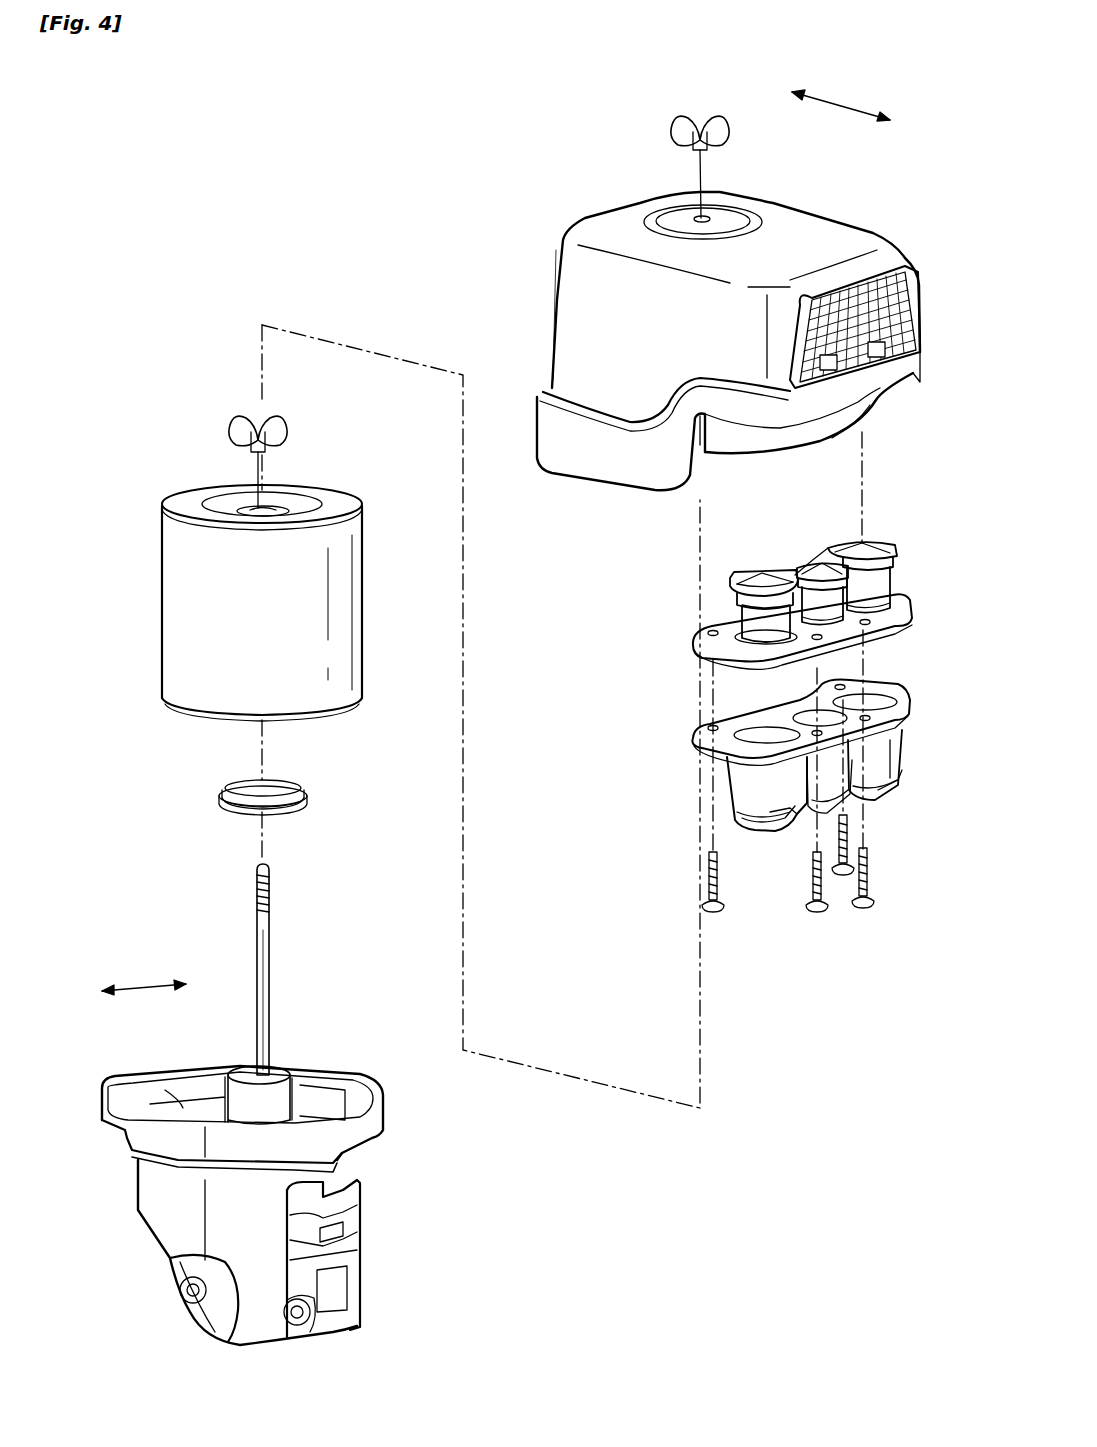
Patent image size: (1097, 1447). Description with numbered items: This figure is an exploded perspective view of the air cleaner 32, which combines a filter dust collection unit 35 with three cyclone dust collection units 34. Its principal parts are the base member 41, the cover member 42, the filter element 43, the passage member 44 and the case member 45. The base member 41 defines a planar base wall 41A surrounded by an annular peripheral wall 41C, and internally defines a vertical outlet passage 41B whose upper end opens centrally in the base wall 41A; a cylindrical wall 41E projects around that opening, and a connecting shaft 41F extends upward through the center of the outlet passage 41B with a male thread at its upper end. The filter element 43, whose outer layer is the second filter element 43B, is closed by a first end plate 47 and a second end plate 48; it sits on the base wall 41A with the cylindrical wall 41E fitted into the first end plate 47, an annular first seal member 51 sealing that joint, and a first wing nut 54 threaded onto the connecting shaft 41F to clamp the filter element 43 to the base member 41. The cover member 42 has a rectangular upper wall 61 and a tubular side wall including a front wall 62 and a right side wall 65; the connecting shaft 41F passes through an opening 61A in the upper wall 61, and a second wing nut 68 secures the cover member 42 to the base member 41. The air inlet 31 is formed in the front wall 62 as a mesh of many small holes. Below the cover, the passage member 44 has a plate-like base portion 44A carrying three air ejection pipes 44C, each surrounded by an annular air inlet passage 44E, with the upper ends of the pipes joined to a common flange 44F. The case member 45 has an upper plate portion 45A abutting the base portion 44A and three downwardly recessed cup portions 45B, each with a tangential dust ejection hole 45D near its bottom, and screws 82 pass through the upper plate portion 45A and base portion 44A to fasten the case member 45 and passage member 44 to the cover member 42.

The air cleaner 32 is at (193, 170).
The cover member 42 is at (565, 208).
The upper wall 61 is at (795, 230).
The opening 61A is at (700, 218).
The second wing nut 68 is at (700, 108).
The right side wall 65 is at (558, 304).
The air inlet 31 is at (895, 300).
The front wall 62 is at (918, 375).
The cyclone dust collection unit 34 is at (882, 496).
The passage member 44 is at (688, 636).
The base portion 44A is at (690, 646).
The air ejection pipe 44C is at (745, 597).
The air inlet passage 44E is at (735, 626).
The flange 44F is at (728, 576).
The case member 45 is at (728, 800).
The upper plate portion 45A is at (700, 730).
The cup portion 45B is at (746, 832).
The dust ejection hole 45D is at (768, 800).
The screws 82 is at (873, 890).
The filter dust collection unit 35 is at (178, 450).
The first wing nut 54 is at (254, 428).
The filter element 43 is at (150, 582).
The first end plate 47 is at (330, 490).
The second filter element 43B is at (175, 651).
The second end plate 48 is at (328, 716).
The first seal member 51 is at (300, 806).
The connecting shaft 41F is at (258, 930).
The base member 41 is at (142, 1228).
The base wall 41A is at (176, 1094).
The outlet passage 41B is at (290, 1075).
The peripheral wall 41C is at (106, 1110).
The cylindrical wall 41E is at (230, 1090).